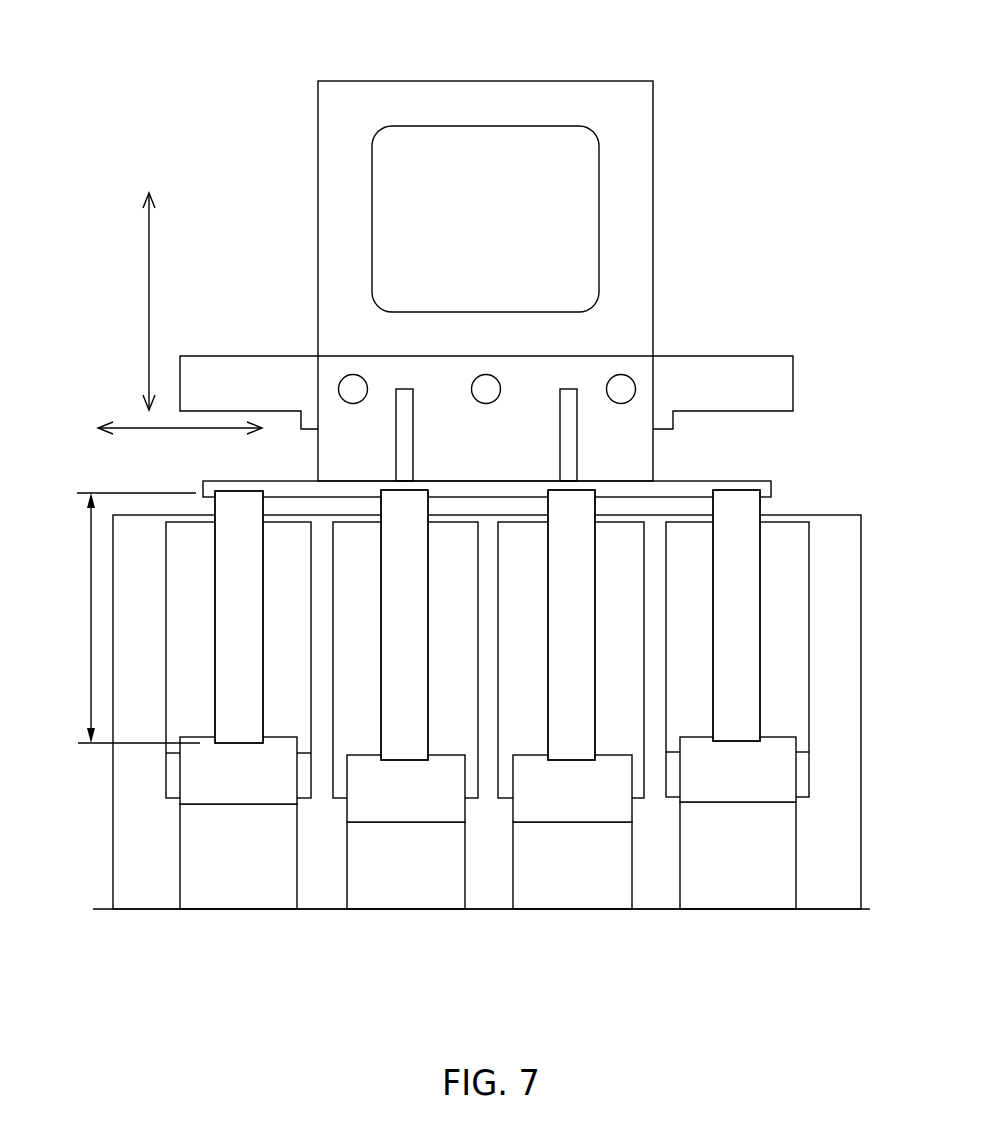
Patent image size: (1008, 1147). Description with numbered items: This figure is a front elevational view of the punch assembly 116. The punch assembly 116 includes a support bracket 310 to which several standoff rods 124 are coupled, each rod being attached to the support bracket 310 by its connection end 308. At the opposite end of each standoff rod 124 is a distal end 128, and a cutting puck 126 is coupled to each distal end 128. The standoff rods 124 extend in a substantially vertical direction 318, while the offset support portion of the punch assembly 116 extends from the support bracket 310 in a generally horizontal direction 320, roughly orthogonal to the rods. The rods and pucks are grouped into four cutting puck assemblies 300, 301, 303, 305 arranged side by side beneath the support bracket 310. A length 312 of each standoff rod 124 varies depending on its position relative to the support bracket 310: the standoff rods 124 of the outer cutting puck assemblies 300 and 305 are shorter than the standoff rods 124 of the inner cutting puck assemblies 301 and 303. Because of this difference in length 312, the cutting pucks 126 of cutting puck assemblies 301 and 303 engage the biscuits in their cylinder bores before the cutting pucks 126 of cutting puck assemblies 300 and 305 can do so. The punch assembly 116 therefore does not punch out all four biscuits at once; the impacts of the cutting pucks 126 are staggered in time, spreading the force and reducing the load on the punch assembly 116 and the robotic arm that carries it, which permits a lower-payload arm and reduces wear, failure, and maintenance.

The punch assembly 116 is at (462, 62).
The support bracket 310 is at (470, 488).
The connection end 308 is at (256, 523).
The standoff rods 124 is at (256, 622).
The distal end 128 is at (256, 730).
The cutting pucks 126 is at (256, 785).
The cutting puck assembly 300 is at (243, 945).
The cutting puck assembly 301 is at (412, 945).
The cutting puck assembly 303 is at (573, 945).
The cutting puck assembly 305 is at (748, 945).
The vertical direction 318 is at (149, 363).
The horizontal direction 320 is at (209, 430).
The length 312 is at (91, 530).